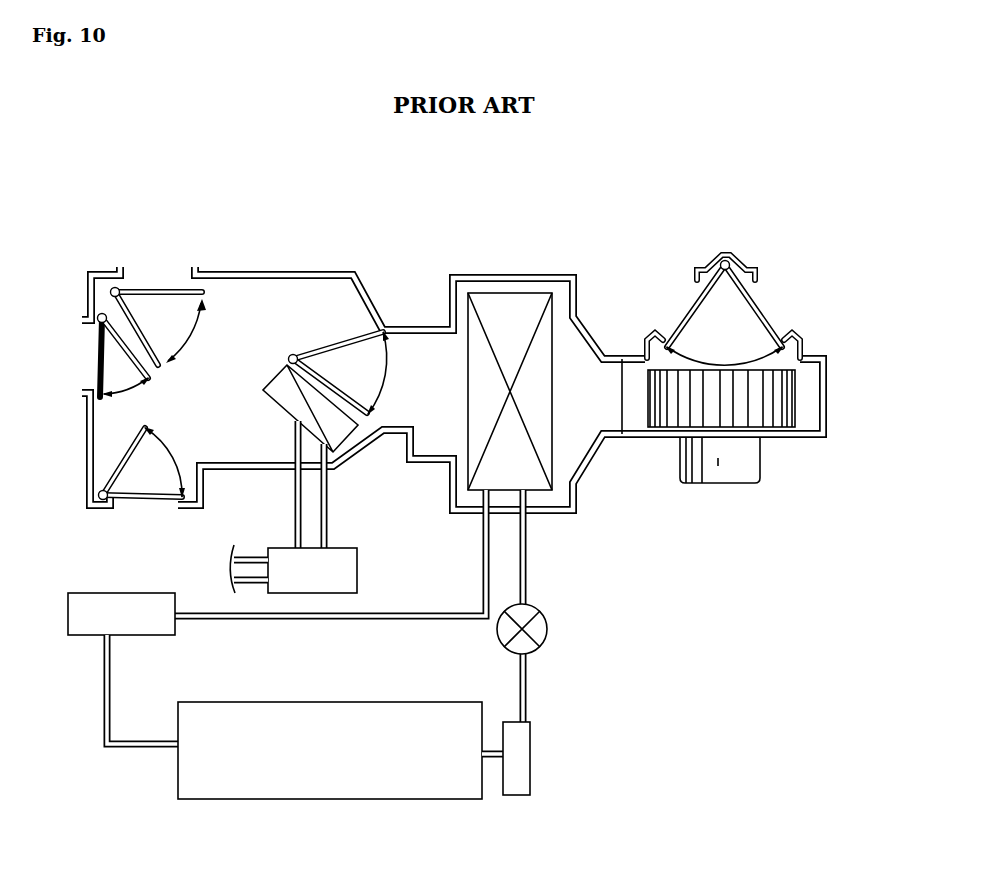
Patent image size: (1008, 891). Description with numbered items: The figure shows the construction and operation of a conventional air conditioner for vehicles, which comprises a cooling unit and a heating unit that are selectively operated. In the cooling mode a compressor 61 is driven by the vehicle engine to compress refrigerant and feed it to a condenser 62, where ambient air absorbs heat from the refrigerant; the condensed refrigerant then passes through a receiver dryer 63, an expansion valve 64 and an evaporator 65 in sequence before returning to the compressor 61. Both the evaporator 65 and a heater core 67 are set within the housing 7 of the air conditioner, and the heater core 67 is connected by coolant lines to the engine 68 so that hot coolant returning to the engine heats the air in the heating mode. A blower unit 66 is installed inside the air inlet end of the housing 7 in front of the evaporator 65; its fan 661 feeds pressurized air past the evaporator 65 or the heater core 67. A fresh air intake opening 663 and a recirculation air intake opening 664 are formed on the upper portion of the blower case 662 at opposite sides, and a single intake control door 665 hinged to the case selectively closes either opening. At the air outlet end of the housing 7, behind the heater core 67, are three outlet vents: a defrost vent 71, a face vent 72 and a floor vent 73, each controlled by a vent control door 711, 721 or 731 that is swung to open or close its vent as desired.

The housing 7 is at (323, 270).
The defrost vent 71 is at (162, 273).
The vent control door 711 is at (140, 325).
The face vent 72 is at (82, 357).
The rotation range of second damper 721 is at (116, 393).
The floor vent 73 is at (136, 508).
The vent control door 731 is at (158, 505).
The heater core 67 is at (300, 419).
The engine (hot water source) 68 is at (332, 565).
The evaporator 65 is at (532, 413).
The blower unit 66 is at (780, 440).
The fan 661 is at (676, 407).
The blower case 662 is at (825, 384).
The fresh air intake opening 663 is at (781, 330).
The recirculation air intake opening 664 is at (680, 307).
The intake control door 665 is at (755, 300).
The compressor 61 is at (153, 620).
The condenser 62 is at (383, 782).
The receiver dryer 63 is at (522, 770).
The expansion valve 64 is at (530, 627).